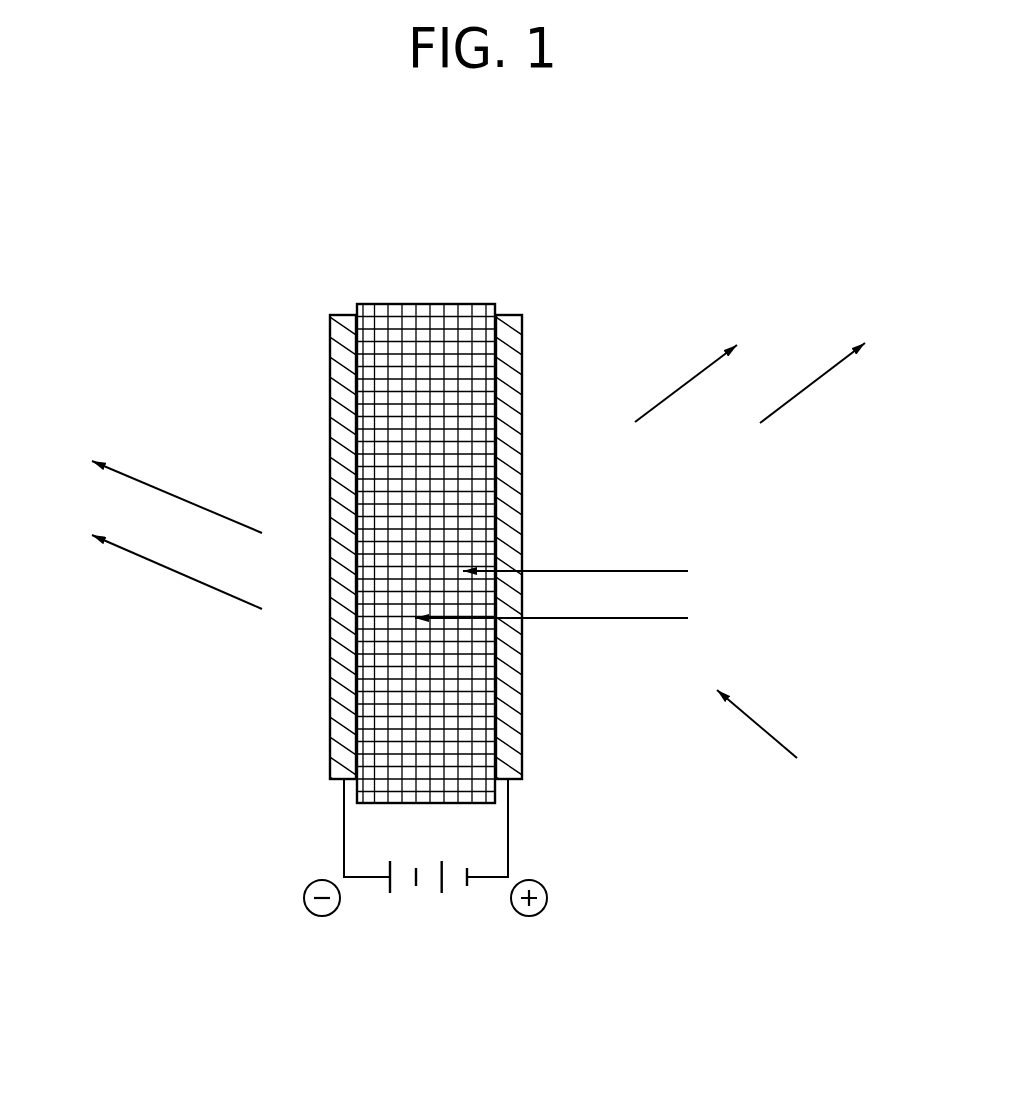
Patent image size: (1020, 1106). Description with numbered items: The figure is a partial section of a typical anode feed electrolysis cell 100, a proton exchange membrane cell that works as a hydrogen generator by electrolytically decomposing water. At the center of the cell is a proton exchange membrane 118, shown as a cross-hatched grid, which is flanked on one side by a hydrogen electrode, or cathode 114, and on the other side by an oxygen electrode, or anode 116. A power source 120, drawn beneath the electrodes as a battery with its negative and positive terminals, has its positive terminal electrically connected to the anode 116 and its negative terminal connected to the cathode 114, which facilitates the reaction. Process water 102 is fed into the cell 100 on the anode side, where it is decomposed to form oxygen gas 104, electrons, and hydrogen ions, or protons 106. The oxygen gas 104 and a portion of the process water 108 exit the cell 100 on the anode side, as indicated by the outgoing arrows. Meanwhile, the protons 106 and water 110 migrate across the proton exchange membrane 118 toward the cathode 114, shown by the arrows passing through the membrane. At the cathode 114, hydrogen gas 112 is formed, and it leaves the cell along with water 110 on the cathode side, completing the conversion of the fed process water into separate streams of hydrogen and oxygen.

The anode feed electrolysis cell 100 is at (458, 282).
The process water 102 is at (776, 737).
The oxygen gas 104 is at (703, 368).
The hydrogen ions (protons) 106 is at (598, 555).
The portion of the process water 108 is at (831, 373).
The water 110 is at (390, 588).
The hydrogen gas 112 is at (154, 482).
The hydrogen electrode (cathode) 114 is at (343, 317).
The oxygen electrode (anode) 116 is at (503, 317).
The proton exchange membrane 118 is at (418, 303).
The power source 120 is at (531, 824).